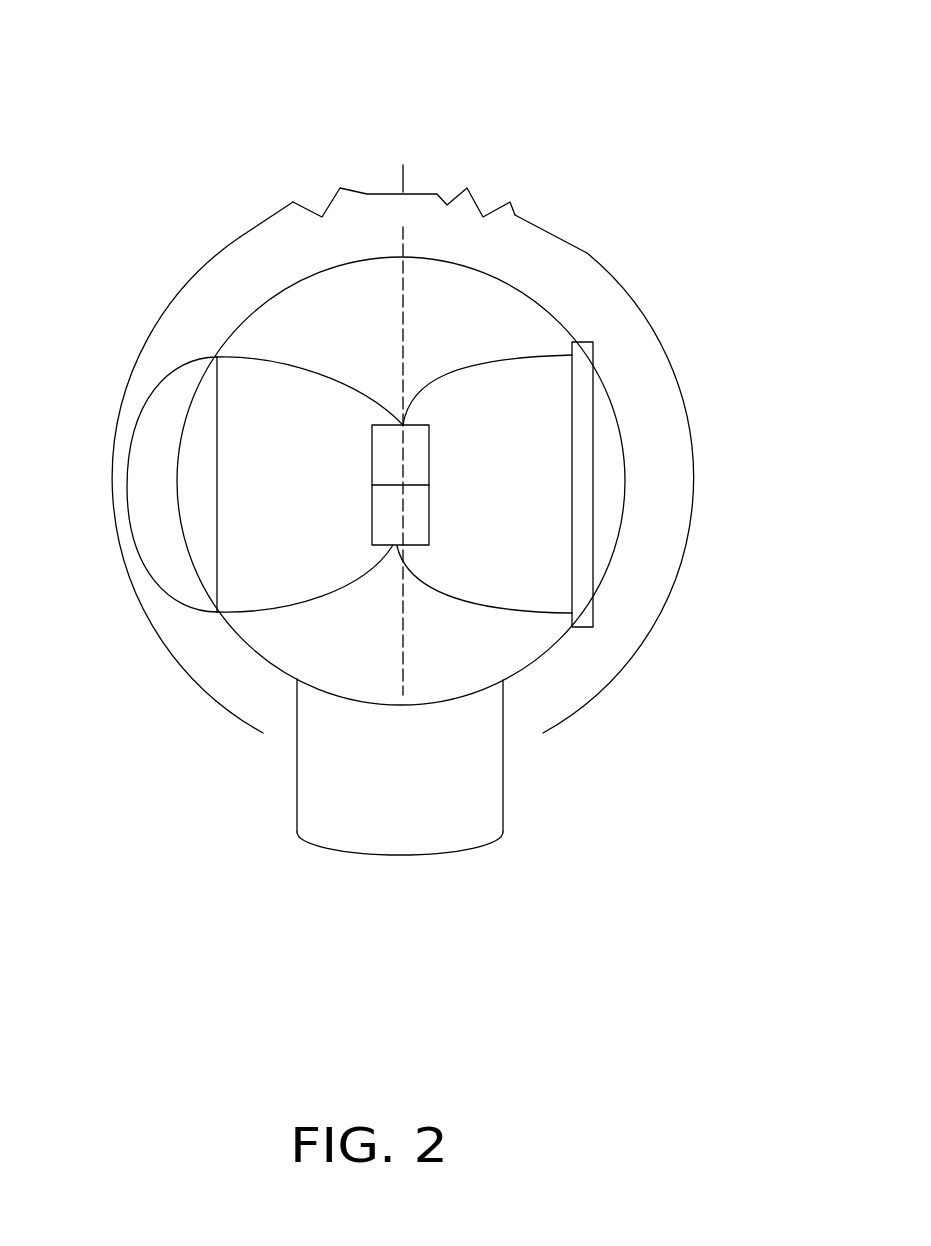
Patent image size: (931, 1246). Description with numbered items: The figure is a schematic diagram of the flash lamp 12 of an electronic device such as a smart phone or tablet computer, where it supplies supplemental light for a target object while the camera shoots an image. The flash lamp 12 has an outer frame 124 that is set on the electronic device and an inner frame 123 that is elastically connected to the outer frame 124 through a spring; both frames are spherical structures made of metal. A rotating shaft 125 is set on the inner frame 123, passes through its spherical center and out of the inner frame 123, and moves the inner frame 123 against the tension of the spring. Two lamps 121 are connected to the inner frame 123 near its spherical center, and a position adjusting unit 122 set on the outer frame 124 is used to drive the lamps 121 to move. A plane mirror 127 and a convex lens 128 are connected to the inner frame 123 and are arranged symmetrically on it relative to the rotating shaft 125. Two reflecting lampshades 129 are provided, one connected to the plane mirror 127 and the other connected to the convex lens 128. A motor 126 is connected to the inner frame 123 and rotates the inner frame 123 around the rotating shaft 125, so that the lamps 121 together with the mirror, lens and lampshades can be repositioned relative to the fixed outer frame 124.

The flash lamp 12 is at (333, 34).
The lamp 121 is at (412, 522).
The position adjusting unit 122 is at (473, 190).
The inner frame 123 is at (268, 302).
The outer frame 124 is at (552, 230).
The rotating shaft 125 is at (402, 243).
The motor 126 is at (485, 763).
The plane mirror 127 is at (583, 462).
The convex lens 128 is at (147, 477).
The reflecting lampshade 129 is at (305, 380).